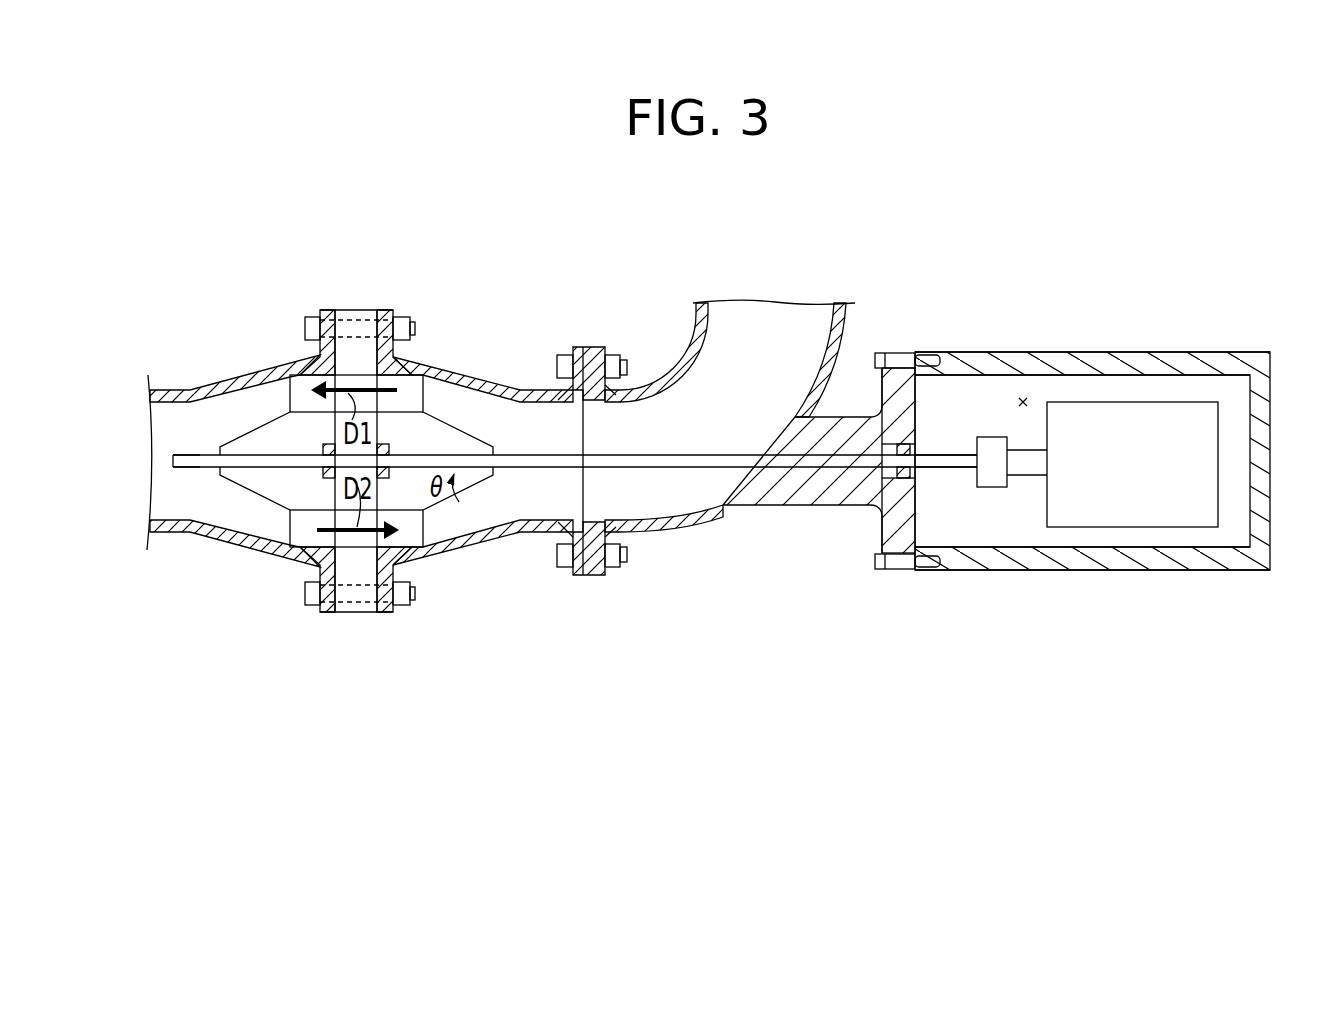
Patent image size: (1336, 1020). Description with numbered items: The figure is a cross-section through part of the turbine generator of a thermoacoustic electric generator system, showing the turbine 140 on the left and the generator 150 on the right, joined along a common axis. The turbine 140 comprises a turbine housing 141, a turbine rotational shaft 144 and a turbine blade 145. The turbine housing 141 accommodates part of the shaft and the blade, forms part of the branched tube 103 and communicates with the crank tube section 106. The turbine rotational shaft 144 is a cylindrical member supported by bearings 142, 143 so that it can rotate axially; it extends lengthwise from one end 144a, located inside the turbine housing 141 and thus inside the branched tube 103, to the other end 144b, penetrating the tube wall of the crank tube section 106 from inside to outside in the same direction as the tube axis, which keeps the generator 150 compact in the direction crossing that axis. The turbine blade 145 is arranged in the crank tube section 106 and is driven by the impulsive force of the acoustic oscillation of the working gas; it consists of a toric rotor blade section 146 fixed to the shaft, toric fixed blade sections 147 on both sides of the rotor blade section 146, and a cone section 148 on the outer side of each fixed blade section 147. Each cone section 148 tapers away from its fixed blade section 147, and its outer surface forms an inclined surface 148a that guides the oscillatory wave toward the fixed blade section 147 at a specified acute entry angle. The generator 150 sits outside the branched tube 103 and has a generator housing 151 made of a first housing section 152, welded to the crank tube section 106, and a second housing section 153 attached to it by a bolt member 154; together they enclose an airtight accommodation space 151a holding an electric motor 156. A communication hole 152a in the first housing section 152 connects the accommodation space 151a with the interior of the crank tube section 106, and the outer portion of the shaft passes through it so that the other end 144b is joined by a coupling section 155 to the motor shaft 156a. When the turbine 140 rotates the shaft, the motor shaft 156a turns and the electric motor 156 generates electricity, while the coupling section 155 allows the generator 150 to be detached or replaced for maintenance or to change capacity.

The branched tube 103 is at (697, 345).
The crank tube section 106 is at (670, 512).
The turbine 140 is at (273, 350).
The turbine housing 141 is at (238, 535).
The bearing 142 is at (321, 470).
The bearing 143 is at (391, 470).
The turbine rotational shaft 144 is at (548, 469).
The one end 144a is at (182, 468).
The other end 144b is at (962, 468).
The turbine blade 145 is at (483, 422).
The rotor blade section 146 is at (347, 372).
The fixed blade section 147 is at (410, 372).
The cone section 148 is at (273, 417).
The inclined surface 148a is at (453, 515).
The generator 150 is at (1120, 330).
The generator housing 151 is at (965, 352).
The accommodation space 151a is at (1023, 402).
The first housing section 152 is at (793, 492).
The communication hole 152a is at (834, 467).
The second housing section 153 is at (1148, 562).
The bolt member 154 is at (908, 362).
The coupling section 155 is at (995, 442).
The electric motor 156 is at (1163, 417).
The motor shaft 156a is at (1027, 466).